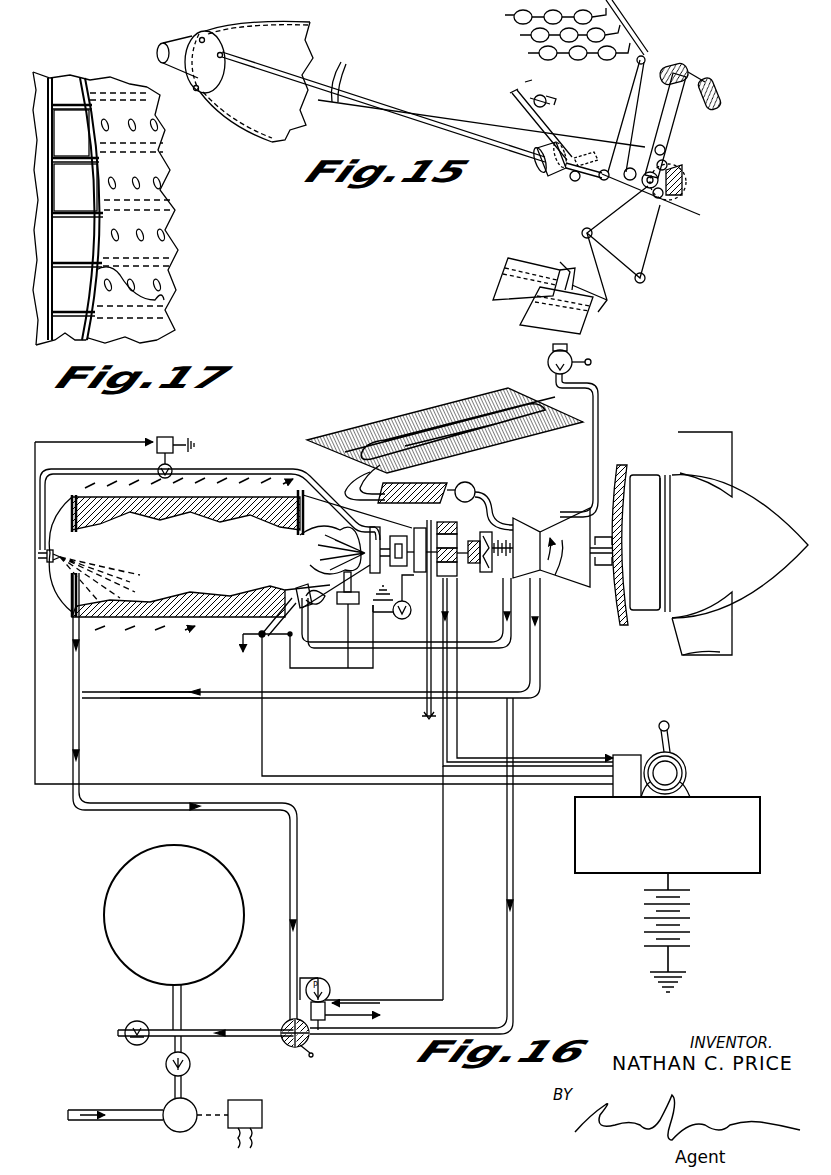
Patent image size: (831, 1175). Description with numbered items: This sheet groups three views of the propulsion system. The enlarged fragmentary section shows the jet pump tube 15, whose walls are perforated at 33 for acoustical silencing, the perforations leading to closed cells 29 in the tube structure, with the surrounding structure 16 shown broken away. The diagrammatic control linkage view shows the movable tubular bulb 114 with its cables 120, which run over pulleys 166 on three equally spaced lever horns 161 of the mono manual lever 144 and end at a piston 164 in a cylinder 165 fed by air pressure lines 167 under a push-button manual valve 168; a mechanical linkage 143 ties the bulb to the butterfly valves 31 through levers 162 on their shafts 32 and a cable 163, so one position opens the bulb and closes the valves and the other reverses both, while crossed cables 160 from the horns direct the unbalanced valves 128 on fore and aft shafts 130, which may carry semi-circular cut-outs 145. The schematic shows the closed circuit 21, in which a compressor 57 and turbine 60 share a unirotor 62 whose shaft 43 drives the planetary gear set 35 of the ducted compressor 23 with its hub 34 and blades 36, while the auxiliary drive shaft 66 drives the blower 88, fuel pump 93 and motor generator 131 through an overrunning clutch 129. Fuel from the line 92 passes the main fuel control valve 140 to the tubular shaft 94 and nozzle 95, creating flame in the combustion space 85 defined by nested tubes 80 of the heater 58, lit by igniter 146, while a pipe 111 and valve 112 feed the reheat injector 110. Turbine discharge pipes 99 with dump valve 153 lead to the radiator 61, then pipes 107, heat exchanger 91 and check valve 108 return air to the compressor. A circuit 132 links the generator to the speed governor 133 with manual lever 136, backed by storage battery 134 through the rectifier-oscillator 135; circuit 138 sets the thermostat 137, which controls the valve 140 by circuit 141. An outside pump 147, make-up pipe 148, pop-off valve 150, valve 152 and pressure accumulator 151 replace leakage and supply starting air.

In FIG. 17, the jet pump tube 15 is at (146, 210).
In FIG. 17, the frame structure 16 is at (95, 105).
In FIG. 17, the closed cells 29 is at (73, 238).
In FIG. 17, the perforations 33 is at (104, 234).
In FIG. 15, the tubular bulb 114 is at (235, 81).
In FIG. 15, the cables 120 is at (360, 50).
In FIG. 15, the butterfly valves 31 is at (535, 45).
In FIG. 15, the valve shafts 32 is at (600, 60).
In FIG. 15, the levers 162 is at (642, 32).
In FIG. 15, the manual valve 168 is at (542, 97).
In FIG. 15, the air pressure lines 167 is at (540, 115).
In FIG. 15, the cable 163 is at (628, 100).
In FIG. 15, the mechanical linkage 143 is at (578, 148).
In FIG. 15, the manual lever 144 is at (673, 125).
In FIG. 15, the cylinder 165 is at (545, 168).
In FIG. 15, the piston 164 is at (572, 178).
In FIG. 15, the lever horns 161 is at (688, 182).
In FIG. 15, the pulleys 166 is at (667, 198).
In FIG. 15, the crossed cables 160 is at (652, 248).
In FIG. 15, the semi-circular cut-outs 145 is at (560, 268).
In FIG. 15, the valves 128 is at (505, 292).
In FIG. 15, the fore and aft shafts 130 is at (602, 302).
In FIG. 16, the valve 112 is at (172, 437).
In FIG. 16, the pipe 111 is at (243, 445).
In FIG. 16, the fuel injector 110 is at (68, 558).
In FIG. 16, the heater 58 is at (252, 505).
In FIG. 16, the combustion space 85 is at (190, 563).
In FIG. 16, the nozzle 95 is at (312, 552).
In FIG. 16, the pump 93 is at (390, 522).
In FIG. 16, the tubular shaft 94 is at (364, 551).
In FIG. 16, the tubes 80 is at (292, 583).
In FIG. 16, the blower 88 is at (301, 590).
In FIG. 16, the thermostat 137 is at (270, 618).
In FIG. 16, the control circuit 141 is at (345, 672).
In FIG. 16, the fuel igniter 146 is at (355, 598).
In FIG. 16, the main fuel control valve 140 is at (397, 618).
In FIG. 16, the motor generator 131 is at (460, 525).
In FIG. 16, the auxiliary drive shaft 66 is at (492, 565).
In FIG. 16, the compressor 57 is at (527, 518).
In FIG. 16, the turbine 60 is at (562, 528).
In FIG. 16, the compressor-turbine unirotor 62 is at (562, 583).
In FIG. 16, the shaft 43 is at (613, 568).
In FIG. 16, the planetary gear set 35 is at (640, 495).
In FIG. 16, the hub 34 is at (760, 535).
In FIG. 16, the ducted compressor 23 is at (705, 450).
In FIG. 16, the blades 36 is at (716, 650).
In FIG. 16, the closed circuit 21 is at (362, 412).
In FIG. 16, the radiator 61 is at (428, 405).
In FIG. 16, the pipes 107 is at (358, 478).
In FIG. 16, the heat exchanger 91 is at (455, 478).
In FIG. 16, the check valve means 108 is at (480, 486).
In FIG. 16, the dump valve 153 is at (598, 368).
In FIG. 16, the turbine discharge pipes 99 is at (603, 430).
In FIG. 16, the overrunning clutch 129 is at (465, 580).
In FIG. 16, the circuit 132 is at (492, 722).
In FIG. 16, the fuel line 92 is at (420, 665).
In FIG. 16, the circuit 138 is at (262, 697).
In FIG. 16, the pressure make-up pipe 148 is at (118, 810).
In FIG. 16, the speed governor 133 is at (688, 766).
In FIG. 16, the manual lever 136 is at (664, 720).
In FIG. 16, the rectifier-oscillator 135 is at (760, 840).
In FIG. 16, the storage battery 134 is at (680, 912).
In FIG. 16, the pressure accumulator 151 is at (272, 870).
In FIG. 16, the pop-off valve 150 is at (142, 1046).
In FIG. 16, the valve 152 is at (312, 1050).
In FIG. 16, the outside pump 147 is at (172, 1130).